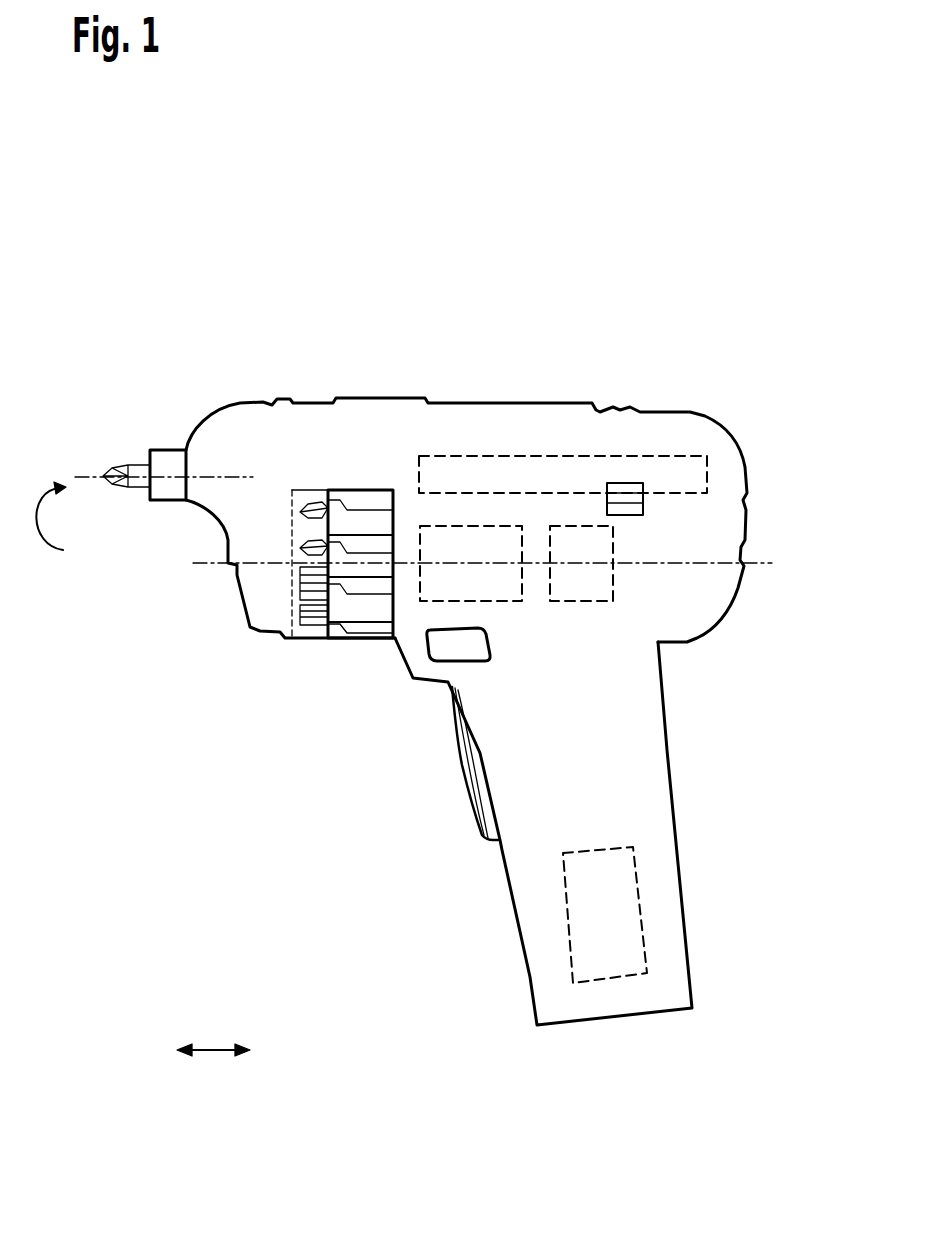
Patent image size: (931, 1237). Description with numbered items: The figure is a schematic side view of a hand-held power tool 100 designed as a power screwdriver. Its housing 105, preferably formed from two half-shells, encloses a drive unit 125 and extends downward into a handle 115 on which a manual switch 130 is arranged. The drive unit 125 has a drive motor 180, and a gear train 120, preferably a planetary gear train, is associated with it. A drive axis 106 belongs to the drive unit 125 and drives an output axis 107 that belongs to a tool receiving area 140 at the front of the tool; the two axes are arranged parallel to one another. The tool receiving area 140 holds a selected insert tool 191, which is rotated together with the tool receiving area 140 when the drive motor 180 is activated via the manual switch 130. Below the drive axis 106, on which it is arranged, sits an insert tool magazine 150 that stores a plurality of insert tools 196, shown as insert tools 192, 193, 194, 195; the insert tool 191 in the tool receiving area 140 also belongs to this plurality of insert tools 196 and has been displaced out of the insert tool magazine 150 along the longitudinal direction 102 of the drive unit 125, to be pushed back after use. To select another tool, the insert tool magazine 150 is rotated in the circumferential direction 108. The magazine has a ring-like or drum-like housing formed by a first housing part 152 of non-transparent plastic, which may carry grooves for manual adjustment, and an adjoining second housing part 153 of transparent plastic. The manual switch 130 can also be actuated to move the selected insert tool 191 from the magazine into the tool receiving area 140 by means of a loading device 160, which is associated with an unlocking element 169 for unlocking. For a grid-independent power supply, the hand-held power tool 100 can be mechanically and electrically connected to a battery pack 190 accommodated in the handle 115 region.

The hand-held power tool 100 is at (398, 298).
The longitudinal direction 102 is at (213, 1050).
The housing 105 is at (483, 420).
The drive axis 106 is at (765, 562).
The output axis 107 is at (87, 473).
The circumferential direction 108 is at (36, 550).
The handle 115 is at (648, 800).
The gear train 120 is at (488, 601).
The drive unit 125 is at (568, 622).
The manual switch 130 is at (488, 807).
The tool receiving area 140 is at (170, 460).
The insert tool magazine 150 is at (274, 655).
The first housing part 152 is at (362, 627).
The second housing part 153 is at (282, 640).
The loading device 160 is at (685, 455).
The unlocking element 169 is at (622, 495).
The drive motor 180 is at (583, 601).
The battery pack 190 is at (640, 900).
The insert tool 191 is at (130, 470).
The insert tool 192 is at (318, 612).
The insert tool 193 is at (310, 588).
The insert tool 194 is at (308, 552).
The insert tool 195 is at (314, 516).
The plurality of insert tools 196 is at (318, 650).